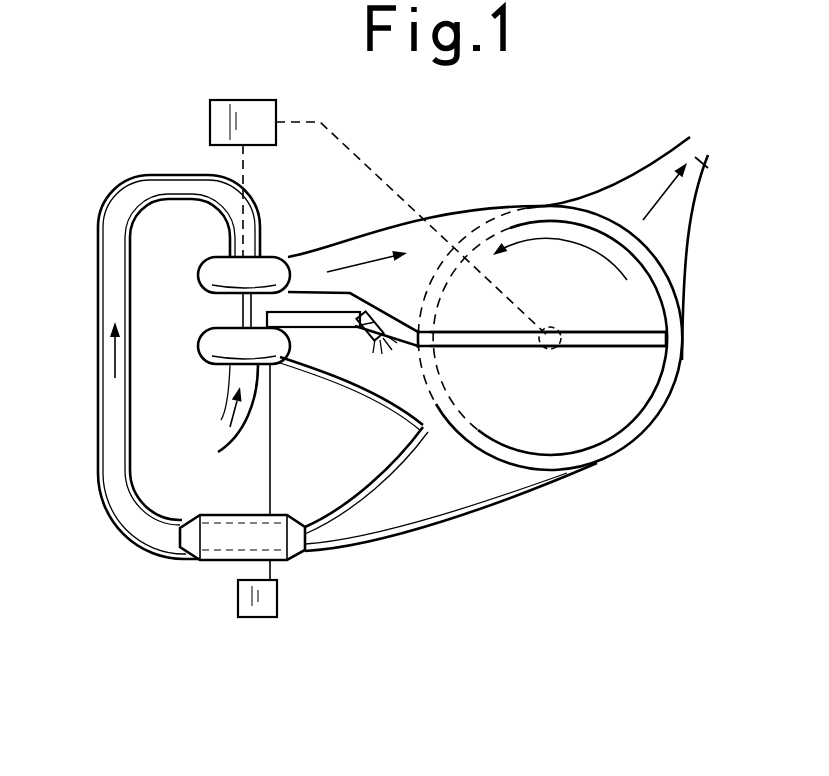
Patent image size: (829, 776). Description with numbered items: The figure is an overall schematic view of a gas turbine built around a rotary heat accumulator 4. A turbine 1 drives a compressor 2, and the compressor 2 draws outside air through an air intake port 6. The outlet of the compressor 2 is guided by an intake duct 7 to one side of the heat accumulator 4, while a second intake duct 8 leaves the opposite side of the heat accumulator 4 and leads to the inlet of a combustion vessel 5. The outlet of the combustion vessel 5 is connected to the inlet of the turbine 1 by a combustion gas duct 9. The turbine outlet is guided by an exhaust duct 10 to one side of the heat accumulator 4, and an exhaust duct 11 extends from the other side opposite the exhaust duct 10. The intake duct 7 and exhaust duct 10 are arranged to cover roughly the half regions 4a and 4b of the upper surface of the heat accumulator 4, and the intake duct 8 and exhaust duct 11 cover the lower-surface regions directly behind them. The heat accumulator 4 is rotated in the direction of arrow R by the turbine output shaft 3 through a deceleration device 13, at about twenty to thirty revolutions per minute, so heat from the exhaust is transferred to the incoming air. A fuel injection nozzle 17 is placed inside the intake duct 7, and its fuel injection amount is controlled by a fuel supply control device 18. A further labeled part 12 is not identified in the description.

The turbine 1 is at (207, 272).
The compressor 2 is at (203, 343).
The turbine output shaft 3 is at (243, 162).
The rotary heat accumulator 4 is at (699, 391).
The half region of upper surface of heat accumulator 4a is at (620, 415).
The half region of upper surface of heat accumulator 4b is at (647, 322).
The combustion vessel 5 is at (210, 562).
The air intake port 6 is at (220, 418).
The intake duct 7 is at (343, 333).
The intake duct 8 is at (467, 517).
The combustion gas duct 9 is at (106, 433).
The exhaust duct 10 is at (462, 235).
The exhaust duct 11 is at (702, 162).
The axis of rotation 12 is at (556, 352).
The deceleration device 13 is at (210, 130).
The fuel injection nozzle 17 is at (360, 327).
The fuel supply control device 18 is at (277, 597).
The arrow indicating rotation direction R is at (531, 240).